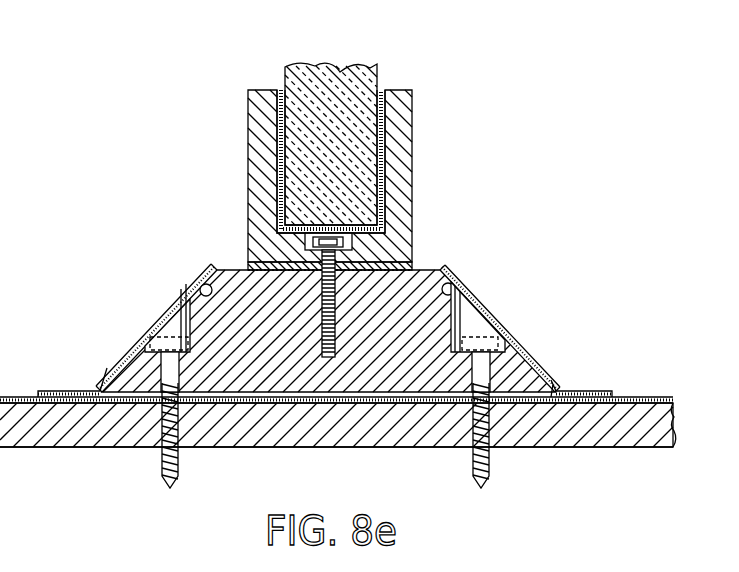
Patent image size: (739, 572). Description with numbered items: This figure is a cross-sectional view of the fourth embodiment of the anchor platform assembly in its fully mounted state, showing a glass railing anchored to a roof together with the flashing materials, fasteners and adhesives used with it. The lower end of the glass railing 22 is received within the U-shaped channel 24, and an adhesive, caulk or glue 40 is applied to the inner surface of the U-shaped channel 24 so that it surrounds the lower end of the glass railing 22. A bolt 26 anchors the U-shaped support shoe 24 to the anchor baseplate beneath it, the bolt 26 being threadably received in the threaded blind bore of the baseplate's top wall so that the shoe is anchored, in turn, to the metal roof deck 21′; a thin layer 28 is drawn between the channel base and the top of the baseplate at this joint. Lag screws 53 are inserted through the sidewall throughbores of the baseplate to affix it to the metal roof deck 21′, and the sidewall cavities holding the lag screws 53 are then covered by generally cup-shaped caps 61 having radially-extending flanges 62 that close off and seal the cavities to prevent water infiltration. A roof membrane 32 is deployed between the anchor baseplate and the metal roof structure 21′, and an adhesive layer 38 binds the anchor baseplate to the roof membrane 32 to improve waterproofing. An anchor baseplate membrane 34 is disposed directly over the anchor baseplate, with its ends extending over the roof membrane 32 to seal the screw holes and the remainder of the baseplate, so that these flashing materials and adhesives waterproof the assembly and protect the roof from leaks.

The glass railing 22 is at (340, 80).
The adhesive, caulk or glue 40 is at (380, 90).
The U-shaped channel 24 is at (412, 100).
The bolt 26 is at (418, 267).
The adhesive layer 28 is at (247, 267).
The radially-extending flanges 62 is at (208, 269).
The cup-shaped caps 61 is at (175, 322).
The lag screws 53 is at (178, 465).
The adhesive layer 38 is at (95, 389).
The anchor baseplate membrane 34 is at (538, 368).
The roof membrane 32 is at (640, 398).
The metal roof deck 21′ is at (614, 448).